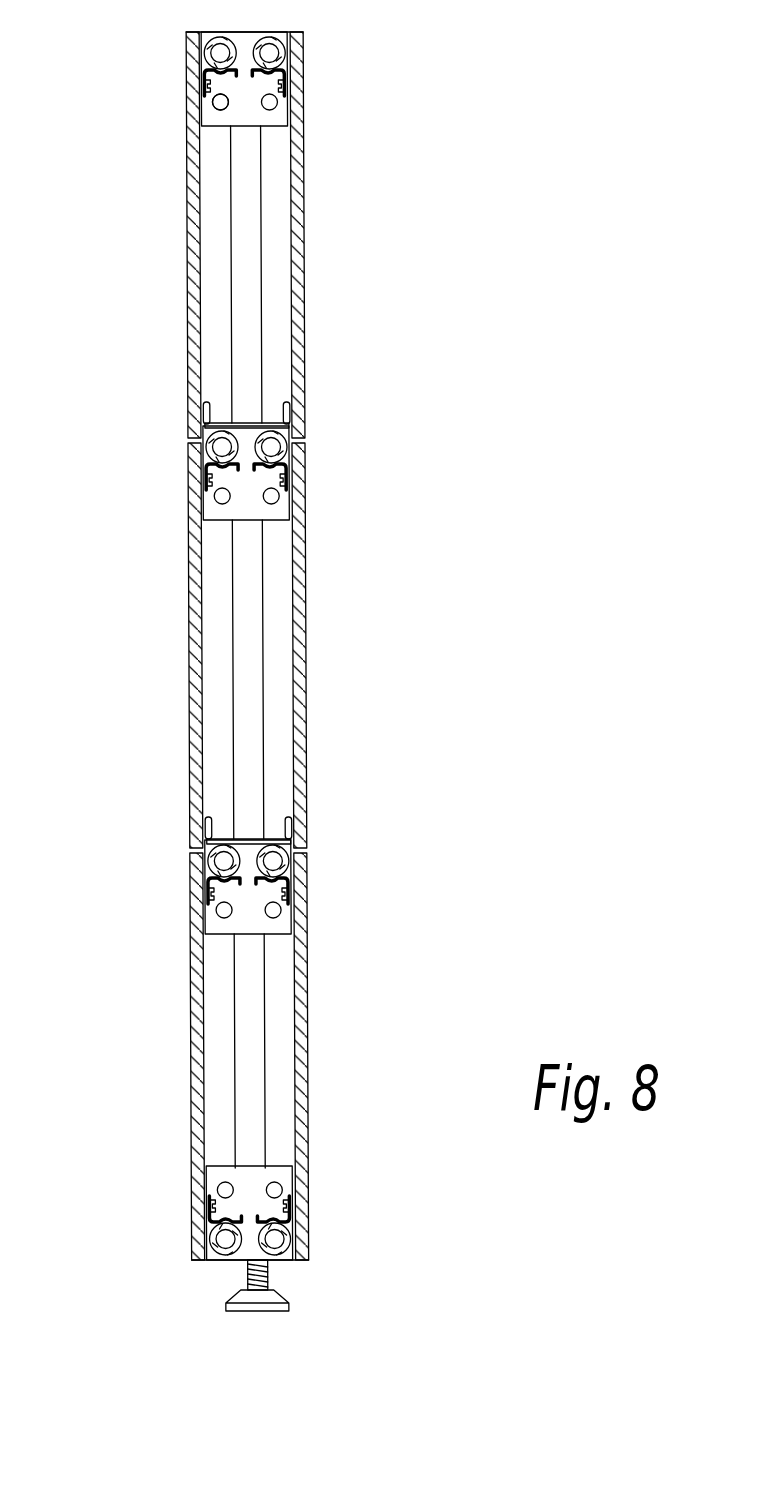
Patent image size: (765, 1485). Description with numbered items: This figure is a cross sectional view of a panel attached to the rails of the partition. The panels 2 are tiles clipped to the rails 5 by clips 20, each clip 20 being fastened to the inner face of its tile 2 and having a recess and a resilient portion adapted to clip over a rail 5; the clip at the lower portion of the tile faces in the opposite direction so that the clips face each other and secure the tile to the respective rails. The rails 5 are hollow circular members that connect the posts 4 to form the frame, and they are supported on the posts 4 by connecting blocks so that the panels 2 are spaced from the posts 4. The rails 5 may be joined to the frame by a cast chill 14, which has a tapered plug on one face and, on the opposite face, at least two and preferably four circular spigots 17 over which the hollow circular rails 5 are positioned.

The tile 2 is at (301, 268).
The post 4 is at (248, 993).
The rail 5 is at (204, 46).
The cast chill 14 is at (252, 115).
The circular spigot 17 is at (213, 107).
The clip 20 is at (202, 69).